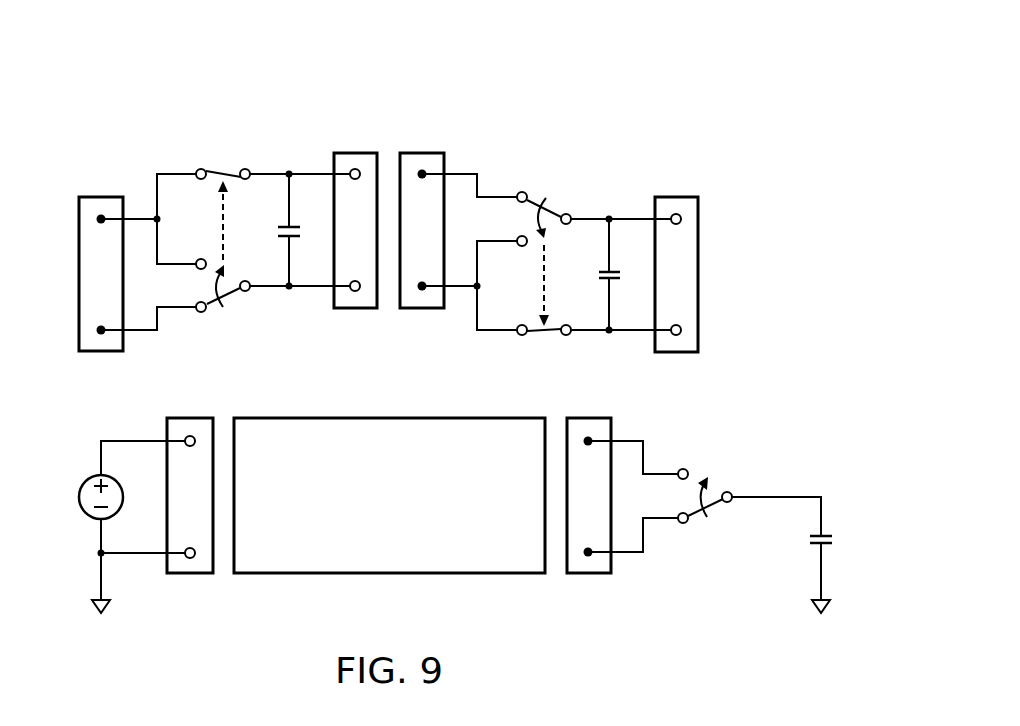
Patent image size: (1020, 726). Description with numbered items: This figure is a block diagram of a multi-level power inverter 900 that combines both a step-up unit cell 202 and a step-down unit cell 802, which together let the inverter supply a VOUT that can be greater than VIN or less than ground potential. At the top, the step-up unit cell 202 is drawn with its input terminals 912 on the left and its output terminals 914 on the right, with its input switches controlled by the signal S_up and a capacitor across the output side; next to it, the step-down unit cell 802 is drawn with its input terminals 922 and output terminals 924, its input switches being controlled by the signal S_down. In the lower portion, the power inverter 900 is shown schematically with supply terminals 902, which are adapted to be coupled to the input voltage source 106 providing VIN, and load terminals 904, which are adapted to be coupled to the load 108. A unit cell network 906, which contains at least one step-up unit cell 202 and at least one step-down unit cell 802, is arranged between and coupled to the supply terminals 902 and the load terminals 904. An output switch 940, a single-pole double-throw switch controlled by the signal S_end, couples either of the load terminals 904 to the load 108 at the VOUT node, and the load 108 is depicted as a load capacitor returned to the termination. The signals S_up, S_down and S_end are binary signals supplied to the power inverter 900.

The multi-level power inverter 900 is at (302, 54).
The step-up unit cell 202 is at (120, 123).
The step-down unit cell 802 is at (658, 123).
The input terminals 912 is at (100, 351).
The output terminals 914 is at (355, 308).
The input terminals 922 is at (422, 308).
The output terminals 924 is at (676, 352).
The supply terminals 902 is at (191, 573).
The unit cell network 906 is at (388, 573).
The load terminals 904 is at (588, 573).
The output switch 940 is at (715, 500).
The input voltage source 106 is at (93, 520).
The load 108 is at (833, 540).